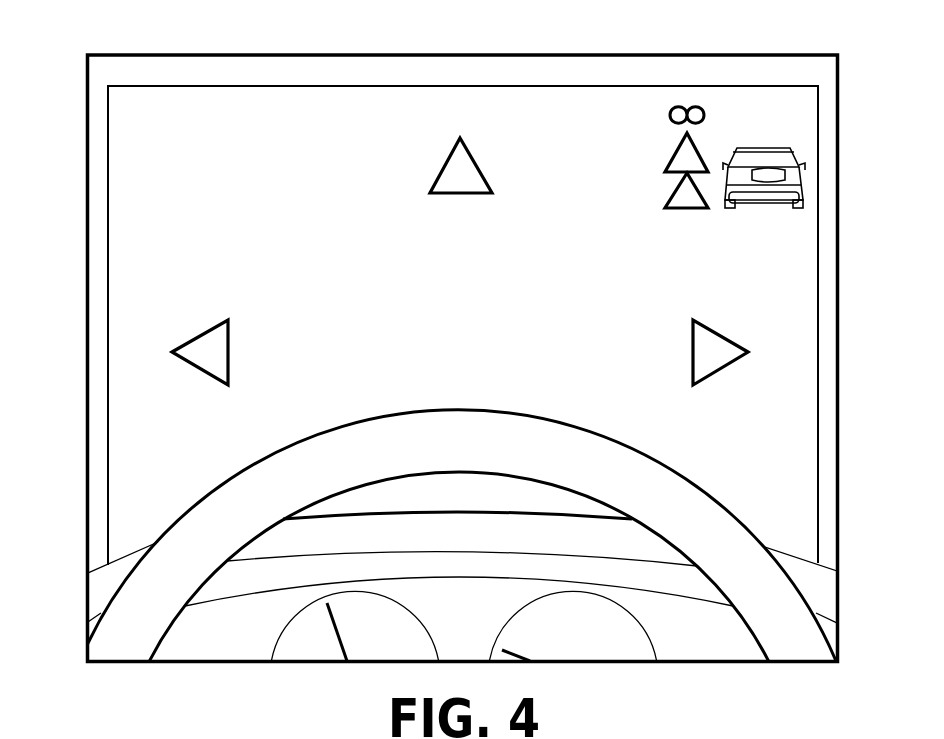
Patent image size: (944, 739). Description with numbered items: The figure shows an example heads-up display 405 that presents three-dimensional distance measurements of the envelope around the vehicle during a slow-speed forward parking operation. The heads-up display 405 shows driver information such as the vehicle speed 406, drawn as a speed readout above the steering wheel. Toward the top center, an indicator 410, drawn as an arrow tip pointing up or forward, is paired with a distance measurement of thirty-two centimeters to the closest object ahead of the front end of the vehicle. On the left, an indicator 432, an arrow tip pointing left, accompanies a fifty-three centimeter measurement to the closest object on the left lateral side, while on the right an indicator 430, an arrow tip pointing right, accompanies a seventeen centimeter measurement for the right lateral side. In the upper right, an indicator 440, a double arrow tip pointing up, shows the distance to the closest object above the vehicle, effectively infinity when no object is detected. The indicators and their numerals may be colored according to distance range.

The heads-up display 405 is at (818, 475).
The vehicle speed 406 is at (377, 377).
The indicator 410 is at (438, 165).
The indicator 430 is at (723, 372).
The indicator 432 is at (197, 374).
The indicator 440 is at (673, 157).